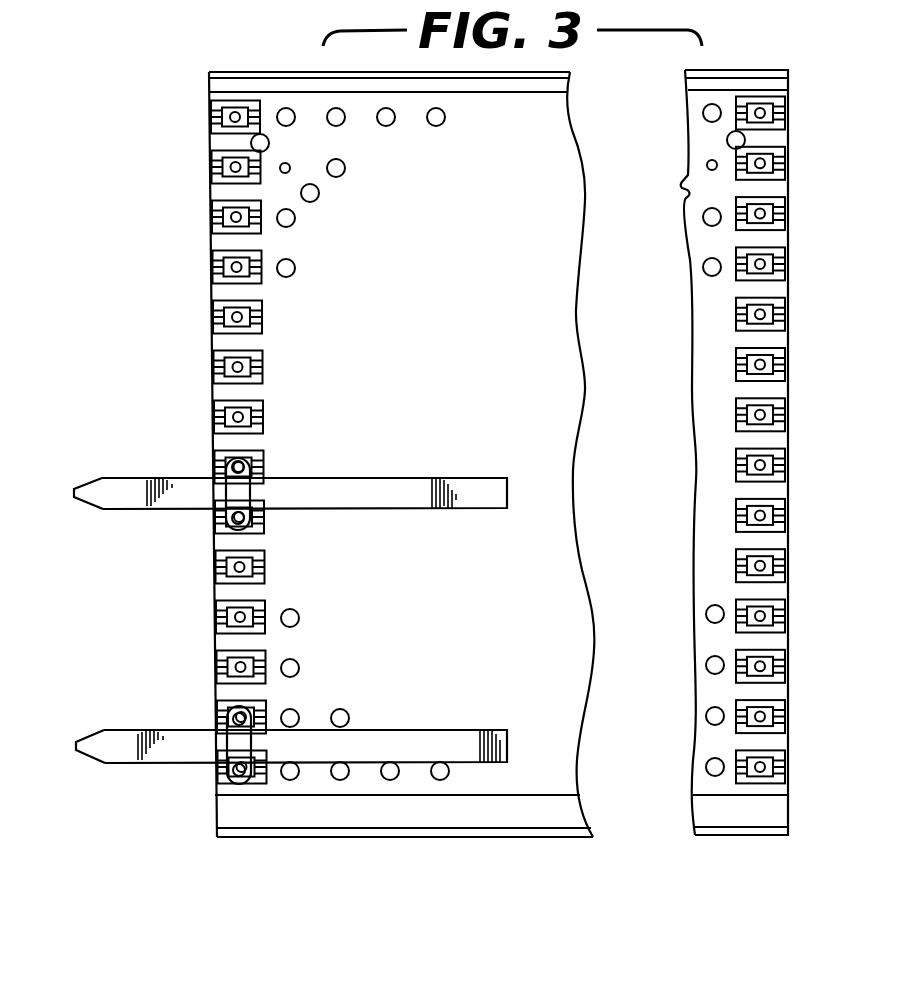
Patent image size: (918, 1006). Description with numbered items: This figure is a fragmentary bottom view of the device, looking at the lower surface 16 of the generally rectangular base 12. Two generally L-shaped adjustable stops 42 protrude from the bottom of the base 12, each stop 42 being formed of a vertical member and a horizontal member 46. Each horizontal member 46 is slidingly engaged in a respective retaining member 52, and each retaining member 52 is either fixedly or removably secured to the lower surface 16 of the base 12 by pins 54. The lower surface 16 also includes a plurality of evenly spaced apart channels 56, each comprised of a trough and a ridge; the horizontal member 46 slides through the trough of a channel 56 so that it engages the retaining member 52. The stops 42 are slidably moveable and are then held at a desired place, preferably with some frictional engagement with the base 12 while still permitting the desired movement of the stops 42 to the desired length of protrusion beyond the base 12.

The base 12 is at (747, 813).
The lower surface 16 is at (572, 330).
The adjustable stop 42 is at (412, 499).
The horizontal member 46 is at (104, 479).
The retaining member 52 is at (247, 483).
The pins 54 is at (234, 514).
The channels 56 is at (783, 353).